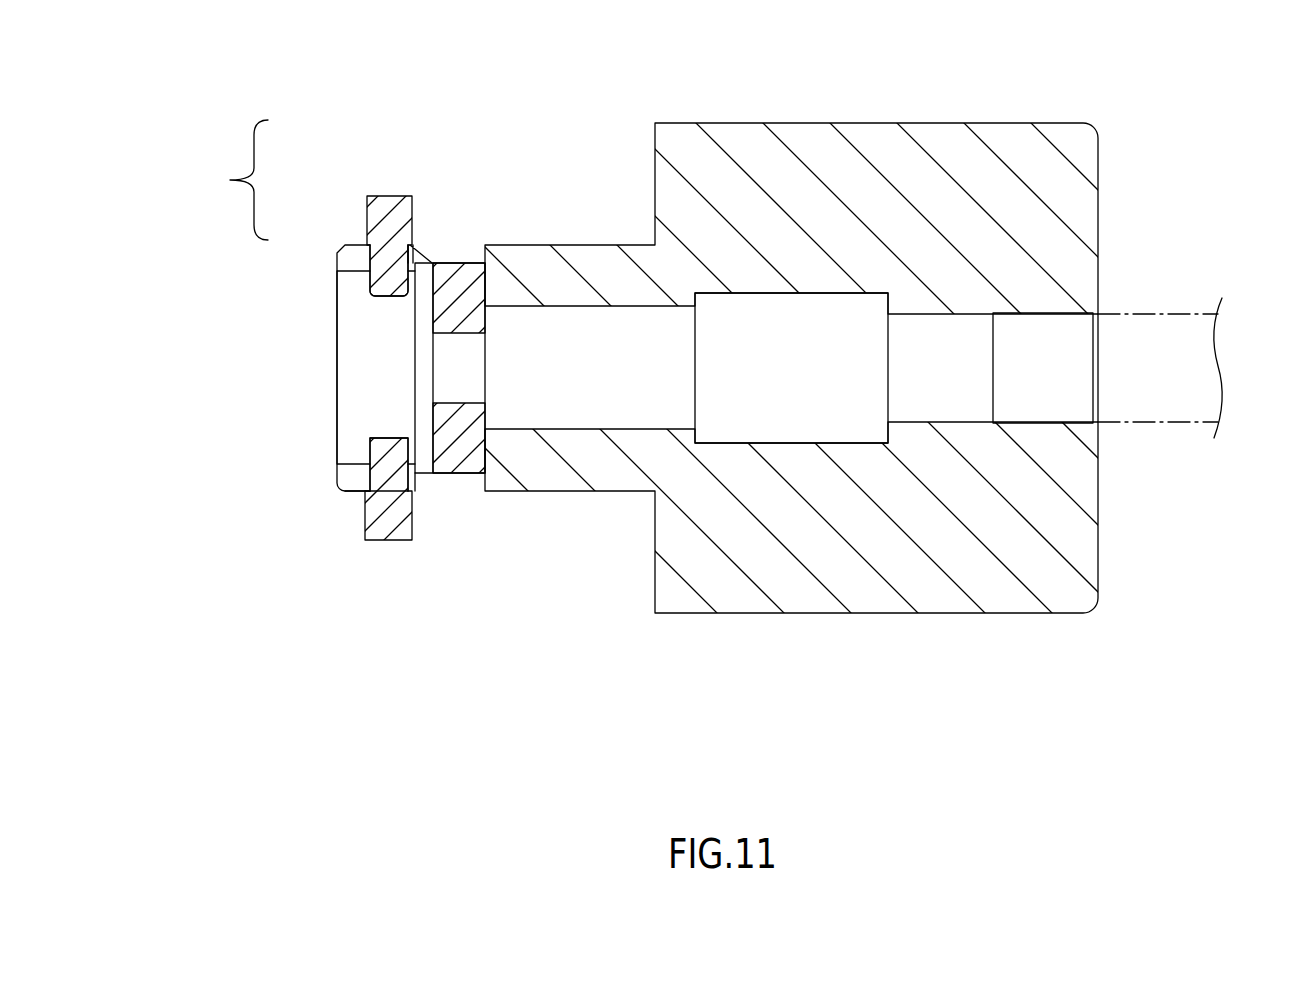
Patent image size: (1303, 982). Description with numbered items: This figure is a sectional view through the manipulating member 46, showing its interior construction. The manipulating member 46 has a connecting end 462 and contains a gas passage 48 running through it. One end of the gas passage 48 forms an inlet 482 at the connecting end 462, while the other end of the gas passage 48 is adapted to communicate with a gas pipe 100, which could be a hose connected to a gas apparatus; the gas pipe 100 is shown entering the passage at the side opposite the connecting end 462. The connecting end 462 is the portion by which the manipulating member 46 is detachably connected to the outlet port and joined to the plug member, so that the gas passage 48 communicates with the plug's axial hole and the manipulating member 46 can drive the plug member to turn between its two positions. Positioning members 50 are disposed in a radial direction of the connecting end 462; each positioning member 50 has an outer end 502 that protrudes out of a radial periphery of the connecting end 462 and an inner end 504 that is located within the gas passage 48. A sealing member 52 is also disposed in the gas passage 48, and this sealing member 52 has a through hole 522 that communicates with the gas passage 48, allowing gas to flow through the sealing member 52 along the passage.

The manipulating member 46 is at (1188, 127).
The gas passage 48 is at (368, 360).
The positioning member 50 is at (229, 180).
The sealing member 52 is at (463, 462).
The gas pipe 100 is at (1165, 314).
The connecting end 462 is at (355, 493).
The inlet 482 is at (337, 372).
The outer end 502 is at (370, 200).
The inner end 504 is at (368, 265).
The through hole 522 is at (465, 375).